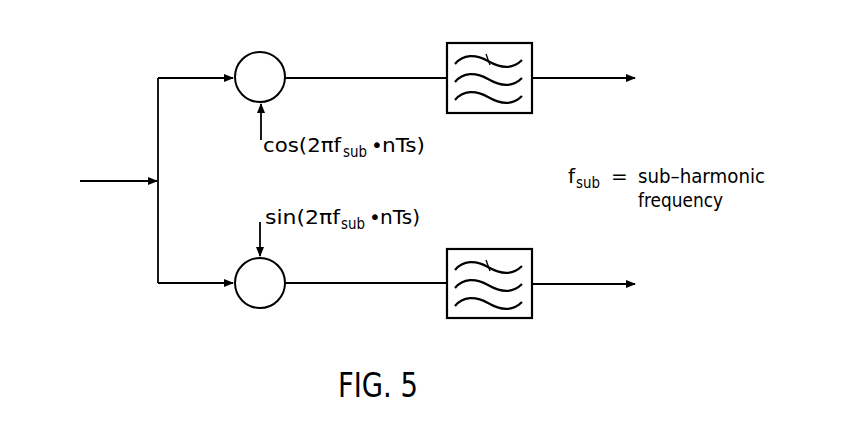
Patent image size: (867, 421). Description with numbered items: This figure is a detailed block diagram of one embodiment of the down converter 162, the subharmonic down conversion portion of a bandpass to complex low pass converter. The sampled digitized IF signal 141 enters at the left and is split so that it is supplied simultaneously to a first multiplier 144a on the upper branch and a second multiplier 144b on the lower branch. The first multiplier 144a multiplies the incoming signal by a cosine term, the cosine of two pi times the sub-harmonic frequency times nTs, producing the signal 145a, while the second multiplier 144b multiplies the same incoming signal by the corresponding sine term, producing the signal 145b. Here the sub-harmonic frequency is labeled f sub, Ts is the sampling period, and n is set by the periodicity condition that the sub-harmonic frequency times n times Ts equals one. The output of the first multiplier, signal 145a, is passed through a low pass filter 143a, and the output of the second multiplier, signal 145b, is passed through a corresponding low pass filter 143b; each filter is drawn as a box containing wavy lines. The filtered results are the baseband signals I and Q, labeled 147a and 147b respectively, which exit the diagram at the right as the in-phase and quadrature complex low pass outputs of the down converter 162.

The sampled digitized IF signal 141 is at (103, 178).
The down converter 162 is at (122, 279).
The first multiplier 144a is at (261, 53).
The second multiplier 144b is at (270, 307).
The signal 145a is at (342, 75).
The signal 145b is at (316, 281).
The low pass filter 143a is at (510, 50).
The low pass filter 143b is at (460, 320).
The baseband signal I 147a is at (572, 76).
The baseband signal Q 147b is at (566, 290).